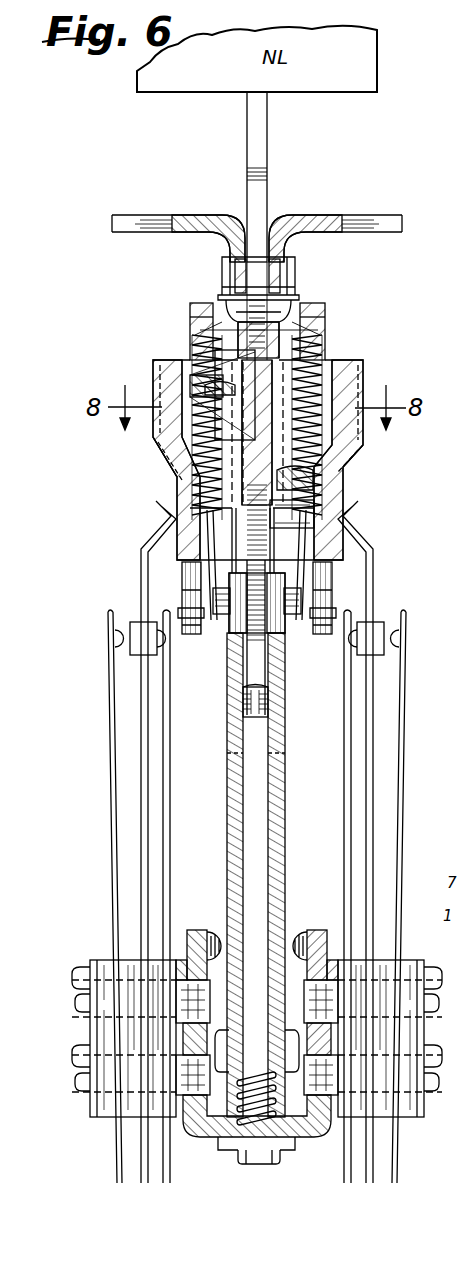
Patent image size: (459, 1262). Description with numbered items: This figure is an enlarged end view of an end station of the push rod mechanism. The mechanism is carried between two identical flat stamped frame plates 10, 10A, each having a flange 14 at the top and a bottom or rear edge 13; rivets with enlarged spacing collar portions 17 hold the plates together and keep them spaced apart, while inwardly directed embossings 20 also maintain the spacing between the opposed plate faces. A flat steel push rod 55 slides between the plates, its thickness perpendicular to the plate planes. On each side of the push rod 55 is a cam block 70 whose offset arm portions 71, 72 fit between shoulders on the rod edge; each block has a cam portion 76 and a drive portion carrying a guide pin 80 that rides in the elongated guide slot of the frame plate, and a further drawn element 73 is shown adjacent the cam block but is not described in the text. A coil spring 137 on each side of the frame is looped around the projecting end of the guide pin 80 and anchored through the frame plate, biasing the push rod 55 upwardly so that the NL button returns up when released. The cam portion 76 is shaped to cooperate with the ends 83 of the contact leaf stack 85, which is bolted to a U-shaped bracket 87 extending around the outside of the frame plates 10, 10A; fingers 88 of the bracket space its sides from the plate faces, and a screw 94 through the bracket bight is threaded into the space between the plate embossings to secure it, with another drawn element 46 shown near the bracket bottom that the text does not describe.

The push rod 55 is at (273, 195).
The flange 14 is at (142, 215).
The spacing collar portion 17 is at (258, 283).
The coil spring 137 is at (322, 312).
The cam block 70 is at (368, 352).
The cam portion 76 is at (364, 396).
The arm portion 72 is at (195, 398).
The detent blocks 73 is at (210, 390).
The arm portion 71 is at (333, 463).
The ends of contact leaf stack 83 is at (146, 533).
The contact leaf stack 85 is at (100, 1130).
The fingers 88 is at (214, 931).
The guide pin 80 is at (282, 637).
The frame plate 10 is at (228, 808).
The frame plate 10A is at (284, 792).
The embossing 20 is at (246, 705).
The spring 46 is at (308, 1128).
The U-shaped bracket 87 is at (211, 1140).
The screw 94 is at (242, 1165).
The bottom or rear edge 13 is at (283, 1166).